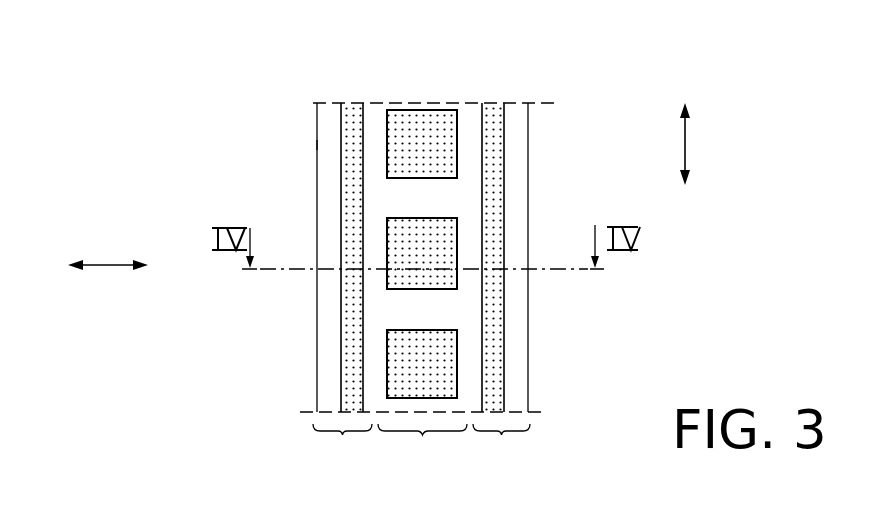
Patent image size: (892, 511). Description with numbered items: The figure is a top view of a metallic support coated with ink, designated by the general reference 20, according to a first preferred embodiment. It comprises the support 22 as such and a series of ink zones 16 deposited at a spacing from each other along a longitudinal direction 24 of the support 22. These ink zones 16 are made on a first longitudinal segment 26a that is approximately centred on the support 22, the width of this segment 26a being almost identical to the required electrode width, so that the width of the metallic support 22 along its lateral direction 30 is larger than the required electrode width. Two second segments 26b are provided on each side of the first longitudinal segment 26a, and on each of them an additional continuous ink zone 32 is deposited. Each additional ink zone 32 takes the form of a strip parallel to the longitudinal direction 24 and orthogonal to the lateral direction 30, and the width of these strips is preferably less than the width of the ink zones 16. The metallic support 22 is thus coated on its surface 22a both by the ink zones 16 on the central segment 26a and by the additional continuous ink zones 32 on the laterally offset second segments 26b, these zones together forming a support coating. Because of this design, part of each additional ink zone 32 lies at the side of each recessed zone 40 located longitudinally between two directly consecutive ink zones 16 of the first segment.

The metallic support coated with ink 20 is at (310, 76).
The support 22 is at (317, 163).
The surface 22a is at (327, 147).
The ink zones 16 is at (423, 127).
The additional continuous ink zone 32 is at (345, 353).
The recessed zone 40 is at (440, 212).
The longitudinal direction 24 is at (685, 140).
The lateral direction 30 is at (112, 263).
The first longitudinal segment 26a is at (422, 440).
The second segments 26b is at (421, 440).